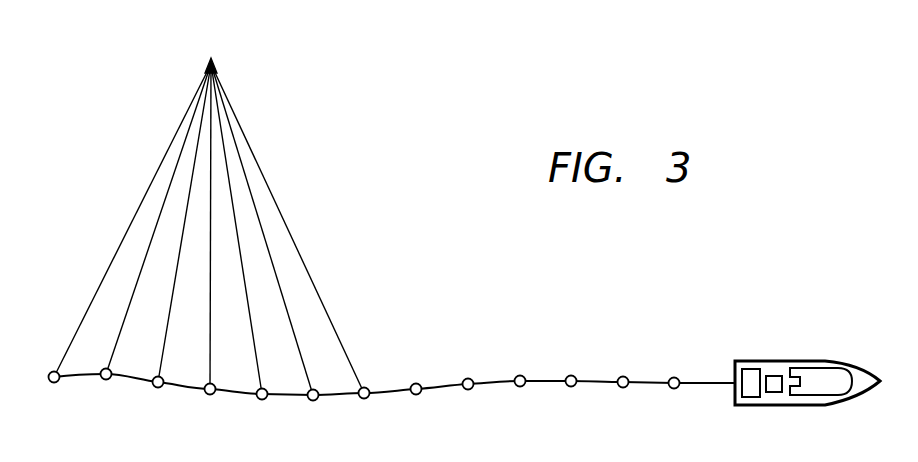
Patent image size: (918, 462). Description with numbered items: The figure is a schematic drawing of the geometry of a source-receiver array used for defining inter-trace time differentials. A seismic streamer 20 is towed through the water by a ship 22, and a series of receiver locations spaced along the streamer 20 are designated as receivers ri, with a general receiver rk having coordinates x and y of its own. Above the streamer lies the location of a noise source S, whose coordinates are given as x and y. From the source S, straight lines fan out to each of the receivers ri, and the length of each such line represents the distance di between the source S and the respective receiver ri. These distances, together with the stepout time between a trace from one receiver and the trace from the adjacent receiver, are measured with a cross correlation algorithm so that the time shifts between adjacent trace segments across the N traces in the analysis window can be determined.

The seismic streamer 20 is at (650, 381).
The ship 22 is at (778, 360).
The noise source location S is at (212, 62).
The source-receiver distance di is at (244, 273).
The receiver location ri is at (261, 408).
The receiver k location rk is at (417, 383).